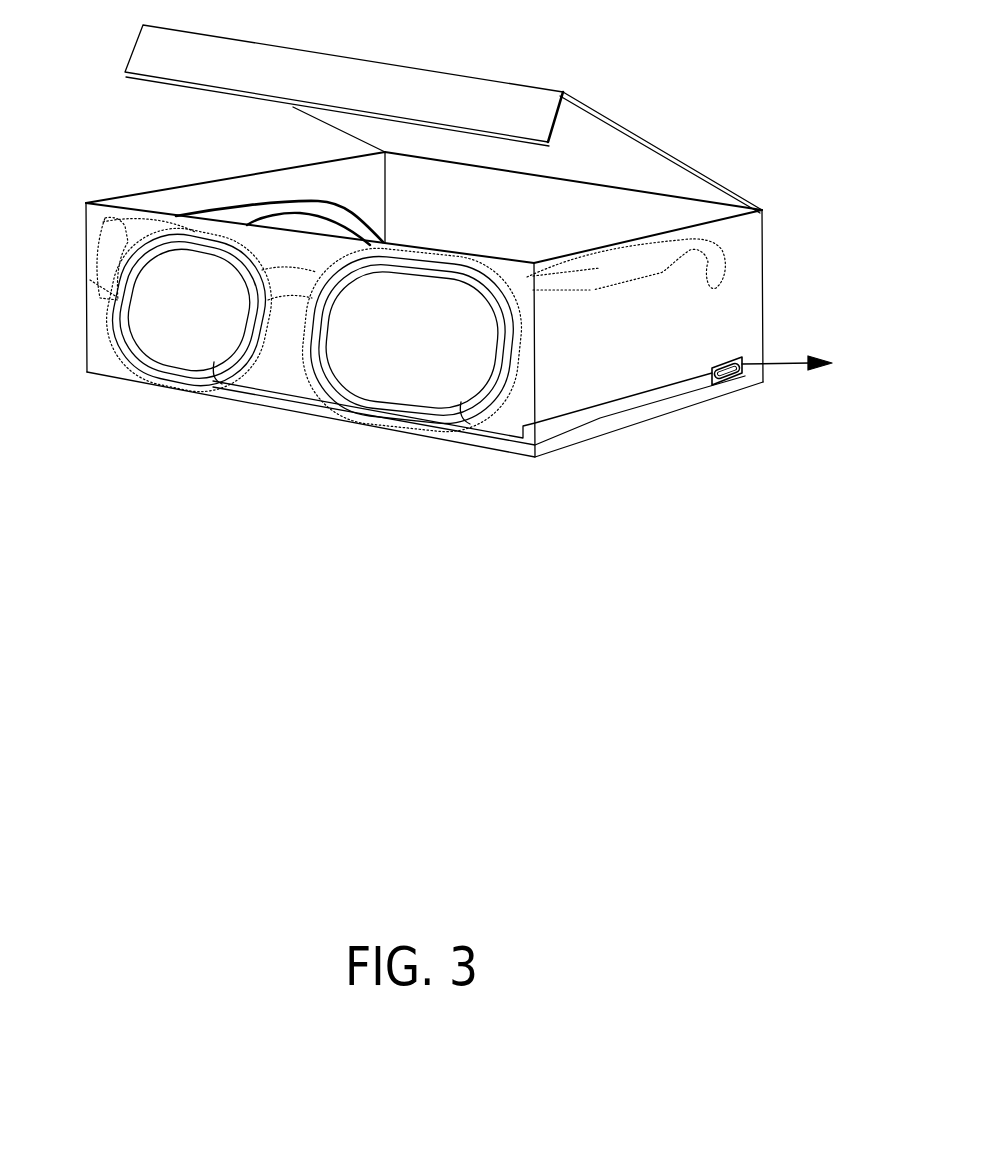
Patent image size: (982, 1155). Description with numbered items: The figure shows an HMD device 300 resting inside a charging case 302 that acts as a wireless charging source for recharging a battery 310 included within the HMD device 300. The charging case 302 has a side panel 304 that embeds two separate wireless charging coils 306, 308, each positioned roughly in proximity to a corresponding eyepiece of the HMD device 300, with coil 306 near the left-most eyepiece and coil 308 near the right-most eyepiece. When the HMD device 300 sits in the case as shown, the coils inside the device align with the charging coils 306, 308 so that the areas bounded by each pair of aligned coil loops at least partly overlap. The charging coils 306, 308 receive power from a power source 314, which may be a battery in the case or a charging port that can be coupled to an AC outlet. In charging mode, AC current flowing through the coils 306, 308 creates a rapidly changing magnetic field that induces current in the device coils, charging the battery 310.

The HMD device 300 is at (250, 203).
The charging case 302 is at (764, 246).
The side panel 304 is at (307, 376).
The wireless charging coil 306 is at (86, 271).
The wireless charging coil 308 is at (500, 373).
The battery 310 is at (582, 288).
The power source 314 is at (731, 384).